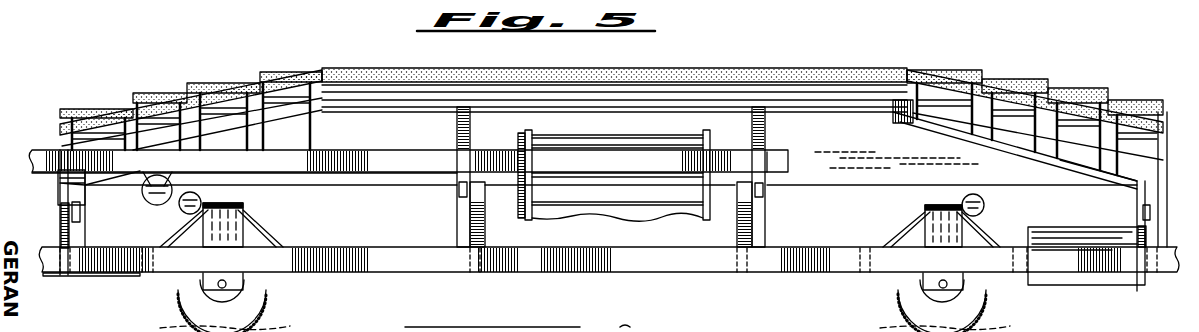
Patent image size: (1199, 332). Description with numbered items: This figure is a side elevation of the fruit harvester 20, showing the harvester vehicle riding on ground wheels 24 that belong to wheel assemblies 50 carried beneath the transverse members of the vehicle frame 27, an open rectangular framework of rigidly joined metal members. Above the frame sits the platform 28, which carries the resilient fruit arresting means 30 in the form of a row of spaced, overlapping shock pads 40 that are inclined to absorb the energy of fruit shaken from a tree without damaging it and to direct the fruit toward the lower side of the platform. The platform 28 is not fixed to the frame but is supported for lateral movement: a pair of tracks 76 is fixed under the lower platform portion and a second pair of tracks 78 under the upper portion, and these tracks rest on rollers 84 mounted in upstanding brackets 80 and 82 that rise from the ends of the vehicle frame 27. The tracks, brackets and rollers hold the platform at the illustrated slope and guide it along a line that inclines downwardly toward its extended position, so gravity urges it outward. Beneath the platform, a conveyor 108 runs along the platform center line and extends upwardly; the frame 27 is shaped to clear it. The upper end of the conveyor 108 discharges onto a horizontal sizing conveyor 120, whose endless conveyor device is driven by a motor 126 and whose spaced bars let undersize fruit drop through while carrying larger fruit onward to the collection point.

The fruit harvester 20 is at (835, 33).
The ground wheels 24 is at (250, 305).
The vehicle frame 27 is at (430, 273).
The platform 28 is at (793, 122).
The resilient fruit arresting means 30 is at (1035, 65).
The shock pads 40 is at (173, 90).
The wheel assemblies 50 is at (248, 213).
The tracks 76 is at (60, 183).
The tracks 78 is at (484, 114).
The upstanding brackets 80 is at (70, 250).
The upstanding brackets 82 is at (480, 238).
The rollers 84 is at (460, 193).
The conveyor 108 is at (629, 215).
The sizing conveyor 120 is at (390, 172).
The motor 126 is at (146, 200).